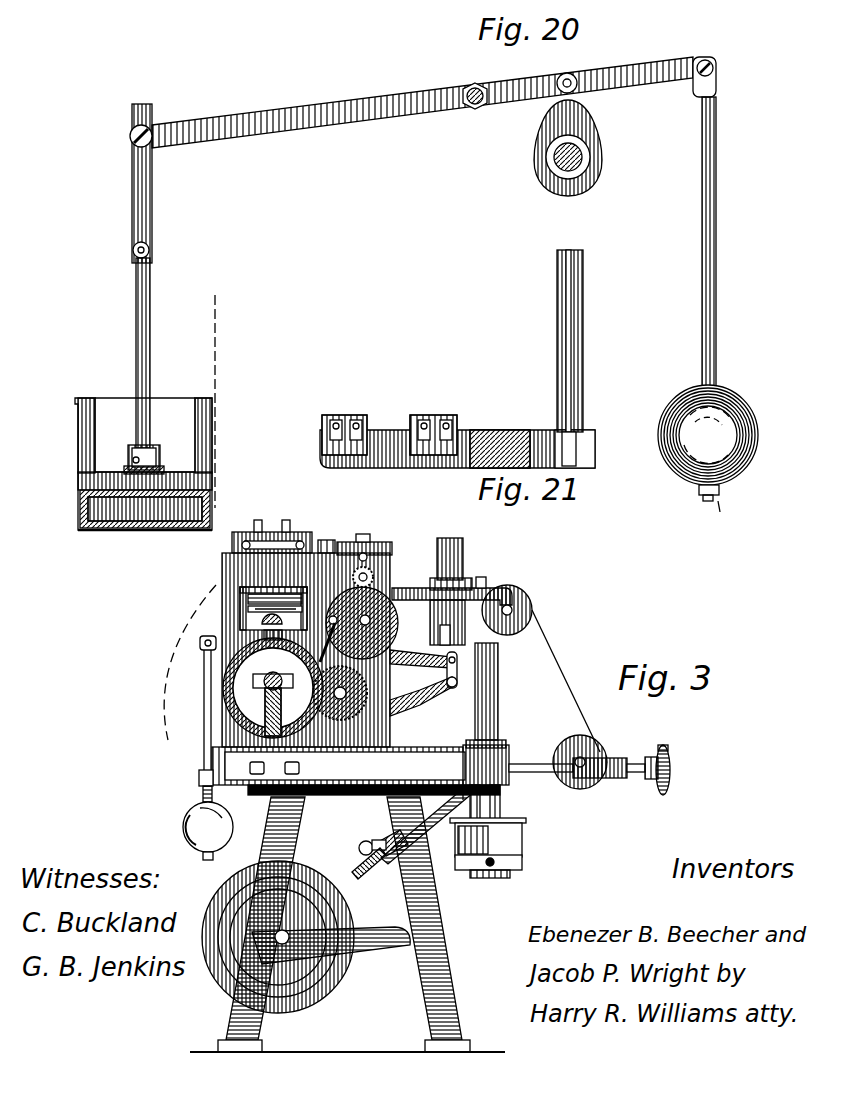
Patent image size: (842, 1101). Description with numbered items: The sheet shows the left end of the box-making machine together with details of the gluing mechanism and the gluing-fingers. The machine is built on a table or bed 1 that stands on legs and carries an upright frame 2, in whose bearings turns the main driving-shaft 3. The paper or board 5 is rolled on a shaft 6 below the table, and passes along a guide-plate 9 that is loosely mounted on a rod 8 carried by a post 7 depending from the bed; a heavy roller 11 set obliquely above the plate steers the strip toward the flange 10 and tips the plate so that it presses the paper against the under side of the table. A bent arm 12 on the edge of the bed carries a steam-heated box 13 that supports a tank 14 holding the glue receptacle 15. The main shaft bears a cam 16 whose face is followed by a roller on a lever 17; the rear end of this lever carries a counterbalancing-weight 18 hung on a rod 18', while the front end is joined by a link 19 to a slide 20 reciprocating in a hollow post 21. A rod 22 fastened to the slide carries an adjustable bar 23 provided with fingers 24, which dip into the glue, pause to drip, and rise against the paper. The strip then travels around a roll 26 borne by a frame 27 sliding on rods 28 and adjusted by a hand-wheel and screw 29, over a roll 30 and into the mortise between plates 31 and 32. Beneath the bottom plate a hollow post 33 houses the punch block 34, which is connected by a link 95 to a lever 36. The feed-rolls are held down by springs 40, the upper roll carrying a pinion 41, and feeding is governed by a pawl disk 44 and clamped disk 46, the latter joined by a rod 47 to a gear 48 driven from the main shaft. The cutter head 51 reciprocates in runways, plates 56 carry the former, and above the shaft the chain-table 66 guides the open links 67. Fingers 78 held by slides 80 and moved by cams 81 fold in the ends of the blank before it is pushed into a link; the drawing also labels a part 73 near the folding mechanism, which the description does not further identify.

In FIG. 3, the table or bed 1 is at (360, 770).
In FIG. 3, the upright frame 2 is at (250, 600).
In FIG. 20, the main driving-shaft 3 is at (580, 168).
In FIG. 3, the paper or board 5 is at (395, 831).
In FIG. 3, the shaft 6 is at (230, 975).
In FIG. 3, the post 7 is at (441, 797).
In FIG. 3, the rod 8 is at (405, 845).
In FIG. 3, the guide-plate 9 is at (427, 825).
In FIG. 3, the flange 10 is at (370, 870).
In FIG. 3, the roller 11 is at (366, 847).
In FIG. 20, the bent arm 12 is at (140, 530).
In FIG. 3, the bent arm 12 is at (490, 878).
In FIG. 20, the box 13 is at (100, 530).
In FIG. 3, the box 13 is at (522, 862).
In FIG. 20, the tank 14 is at (82, 470).
In FIG. 3, the tank 14 is at (522, 836).
In FIG. 20, the receptacle 15 is at (100, 435).
In FIG. 20, the cam 16 is at (600, 140).
In FIG. 20, the lever 17 is at (422, 93).
In FIG. 3, the lever 17 is at (421, 655).
In FIG. 20, the counterbalancing-weight 18 is at (714, 284).
In FIG. 3, the counterbalancing-weight 18 is at (195, 831).
In FIG. 3, the rod 18' is at (183, 685).
In FIG. 20, the link 19 is at (148, 186).
In FIG. 20, the slide 20 is at (133, 272).
In FIG. 3, the hollow post 21 is at (498, 705).
In FIG. 20, the rod 22 is at (127, 353).
In FIG. 21, the rod 22 is at (583, 375).
In FIG. 3, the rod 22 is at (500, 800).
In FIG. 20, the bar 23 is at (160, 462).
In FIG. 21, the bar 23 is at (457, 434).
In FIG. 20, the fingers 24 is at (145, 445).
In FIG. 21, the fingers 24 is at (389, 423).
In FIG. 3, the roll 26 is at (590, 738).
In FIG. 3, the frame 27 is at (612, 778).
In FIG. 3, the rods 28 is at (540, 764).
In FIG. 3, the hand-wheel and screw 29 is at (672, 770).
In FIG. 3, the roll 30 is at (530, 600).
In FIG. 3, the plate 31 is at (482, 577).
In FIG. 3, the bottom plate 32 is at (490, 586).
In FIG. 3, the hollow post 33 is at (465, 635).
In FIG. 3, the block 34 is at (447, 657).
In FIG. 3, the lever 36 is at (425, 700).
In FIG. 3, the adjustable springs 40 is at (367, 557).
In FIG. 3, the pinion 41 is at (388, 576).
In FIG. 3, the disk 44 is at (372, 570).
In FIG. 3, the disk 46 is at (398, 626).
In FIG. 3, the rod 47 is at (350, 642).
In FIG. 3, the gear 48 is at (340, 695).
In FIG. 3, the rectangular head 51 is at (328, 540).
In FIG. 3, the plates 56 is at (275, 530).
In FIG. 3, the chain-table or runway 66 is at (262, 624).
In FIG. 3, the open rectangular links 67 is at (250, 609).
In FIG. 3, the holder 73 is at (264, 636).
In FIG. 3, the fingers 78 is at (243, 589).
In FIG. 3, the slides 80 is at (250, 668).
In FIG. 3, the cams 81 is at (235, 700).
In FIG. 3, the link 95 is at (455, 686).